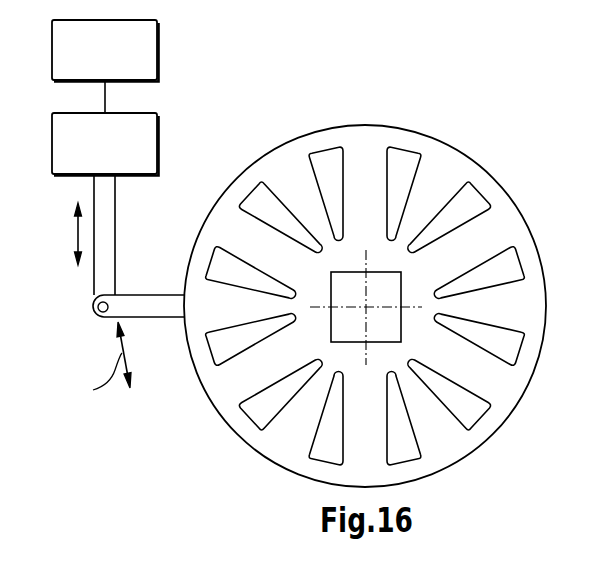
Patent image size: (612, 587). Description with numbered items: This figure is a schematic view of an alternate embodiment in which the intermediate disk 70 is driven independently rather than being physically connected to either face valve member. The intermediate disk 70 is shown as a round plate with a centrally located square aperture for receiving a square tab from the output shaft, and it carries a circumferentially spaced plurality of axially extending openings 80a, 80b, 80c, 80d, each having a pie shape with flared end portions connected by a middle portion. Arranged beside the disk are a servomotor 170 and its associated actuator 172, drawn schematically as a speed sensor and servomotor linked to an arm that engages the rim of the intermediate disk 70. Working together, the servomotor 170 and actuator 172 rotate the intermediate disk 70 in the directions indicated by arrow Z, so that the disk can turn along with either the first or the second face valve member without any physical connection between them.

The intermediate disk 70 is at (520, 189).
The axially extending opening 80a is at (472, 205).
The axially extending opening 80b is at (402, 157).
The axially extending opening 80c is at (328, 155).
The axially extending opening 80d is at (258, 200).
The servomotor 170 is at (157, 135).
The actuator 172 is at (157, 52).